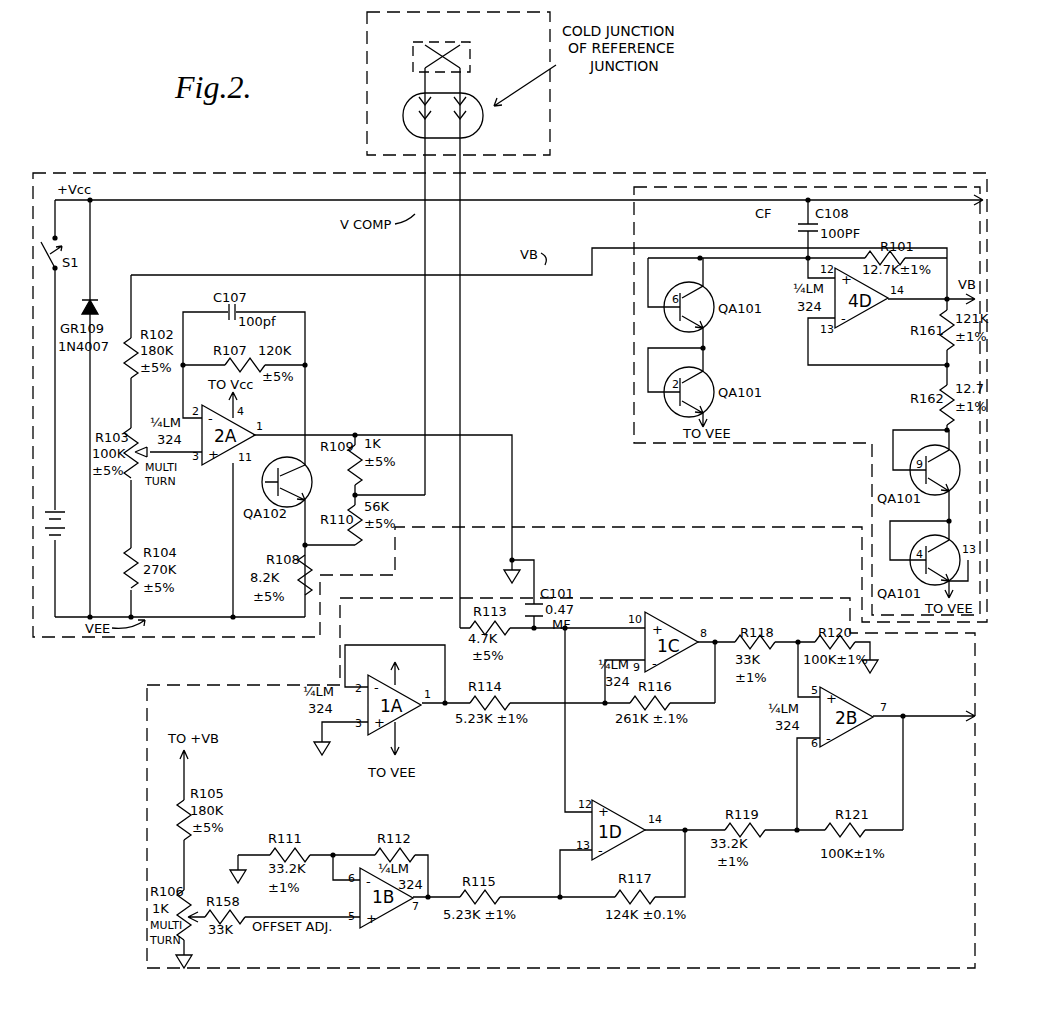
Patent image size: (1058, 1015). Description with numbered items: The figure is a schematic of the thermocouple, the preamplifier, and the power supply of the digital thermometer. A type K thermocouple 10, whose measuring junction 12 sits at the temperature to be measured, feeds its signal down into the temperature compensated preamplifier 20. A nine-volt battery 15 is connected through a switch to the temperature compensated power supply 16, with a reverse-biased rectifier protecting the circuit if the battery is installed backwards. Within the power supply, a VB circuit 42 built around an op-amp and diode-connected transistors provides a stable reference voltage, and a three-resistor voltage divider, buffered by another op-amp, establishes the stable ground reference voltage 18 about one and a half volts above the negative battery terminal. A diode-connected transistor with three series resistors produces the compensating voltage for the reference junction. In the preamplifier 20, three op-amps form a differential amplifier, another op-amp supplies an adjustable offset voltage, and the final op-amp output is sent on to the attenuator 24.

The thermocouple 10 is at (388, 131).
The measuring junction 12 is at (413, 63).
The battery 15 is at (72, 526).
The temperature compensated power supply 16 is at (249, 179).
The ground reference voltage 18 is at (503, 576).
The temperature compensated preamplifier 20 is at (152, 763).
The attenuator 24 is at (924, 753).
The VB circuit 42 is at (650, 180).